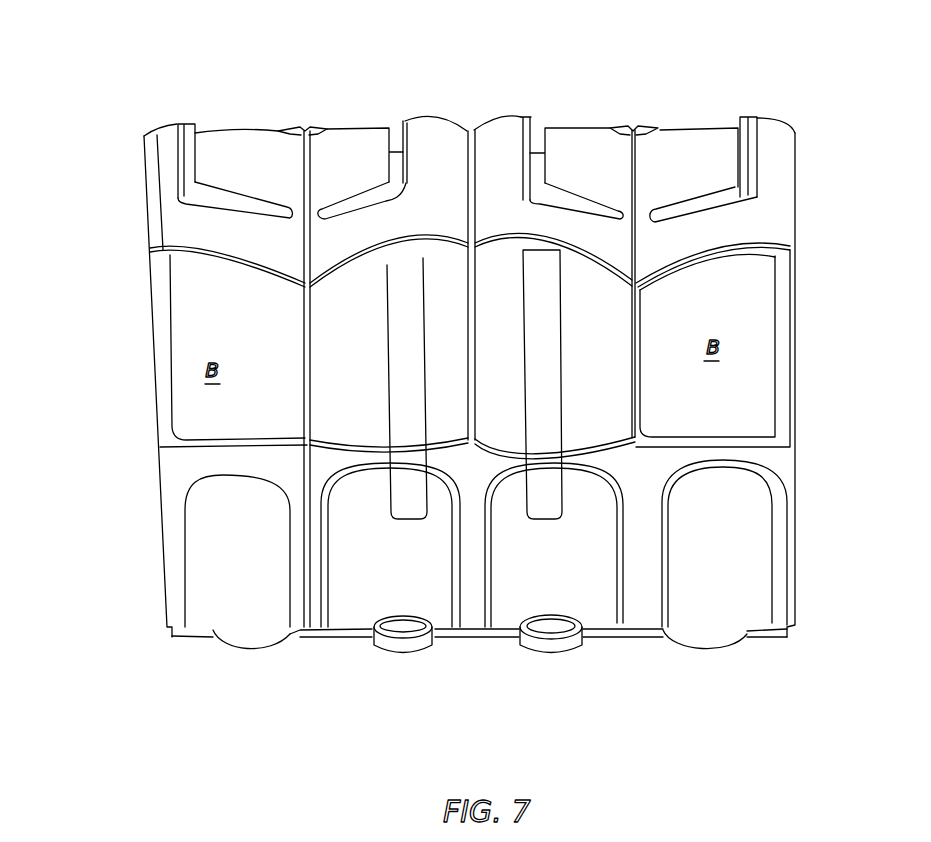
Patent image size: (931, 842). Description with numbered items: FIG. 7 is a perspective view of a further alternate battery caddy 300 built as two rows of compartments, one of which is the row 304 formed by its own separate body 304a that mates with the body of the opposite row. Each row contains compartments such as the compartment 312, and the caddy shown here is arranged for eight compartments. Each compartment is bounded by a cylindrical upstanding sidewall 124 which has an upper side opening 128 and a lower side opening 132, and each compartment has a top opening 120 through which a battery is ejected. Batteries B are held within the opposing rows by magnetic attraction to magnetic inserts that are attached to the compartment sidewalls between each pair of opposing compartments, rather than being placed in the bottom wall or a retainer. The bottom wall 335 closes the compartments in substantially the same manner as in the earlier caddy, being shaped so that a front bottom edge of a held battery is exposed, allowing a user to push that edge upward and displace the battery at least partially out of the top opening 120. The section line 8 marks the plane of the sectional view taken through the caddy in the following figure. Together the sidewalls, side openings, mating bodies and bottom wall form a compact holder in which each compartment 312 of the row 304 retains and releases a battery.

The section line for FIG. 8 is at (227, 115).
The top opening 120 is at (710, 124).
The cylindrical upstanding sidewall 124 is at (145, 172).
The upper side opening 128 is at (170, 335).
The lower side opening 132 is at (187, 567).
The caddy 300 is at (474, 112).
The row of compartments 304 is at (258, 126).
The body 304a is at (422, 112).
The compartment 312 is at (677, 128).
The bottom wall 335 is at (568, 642).